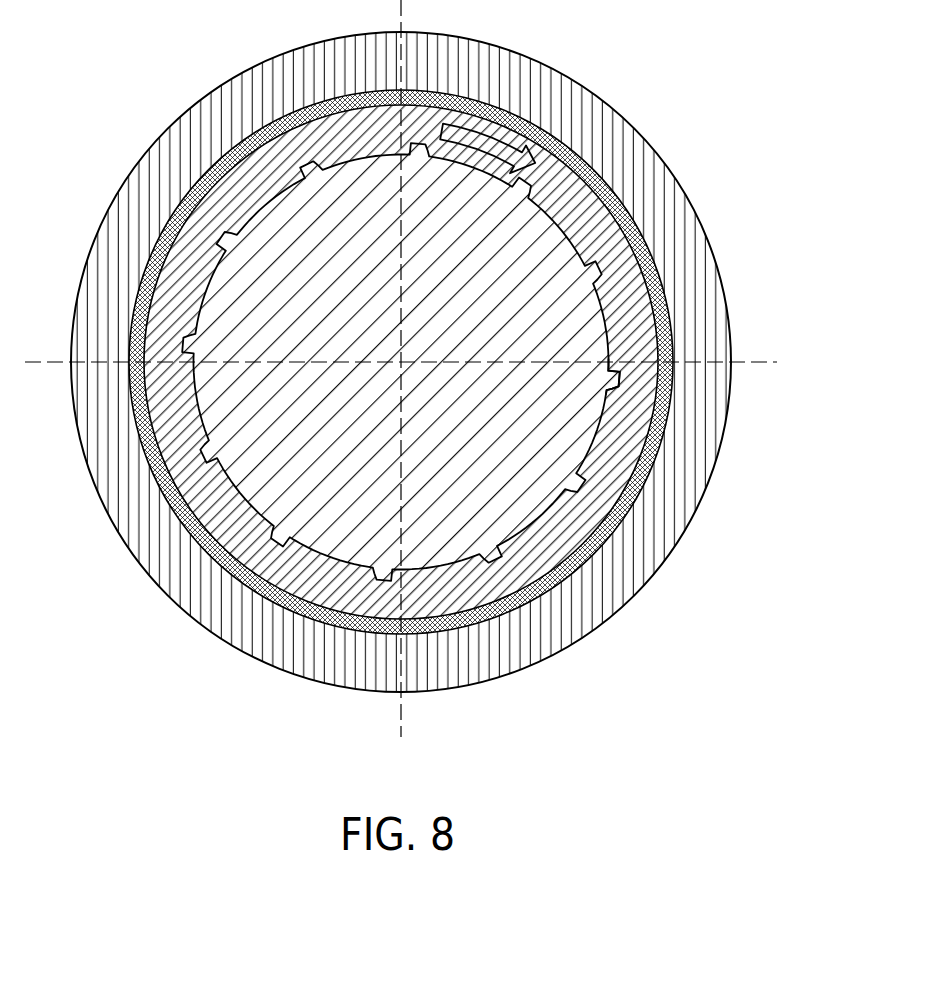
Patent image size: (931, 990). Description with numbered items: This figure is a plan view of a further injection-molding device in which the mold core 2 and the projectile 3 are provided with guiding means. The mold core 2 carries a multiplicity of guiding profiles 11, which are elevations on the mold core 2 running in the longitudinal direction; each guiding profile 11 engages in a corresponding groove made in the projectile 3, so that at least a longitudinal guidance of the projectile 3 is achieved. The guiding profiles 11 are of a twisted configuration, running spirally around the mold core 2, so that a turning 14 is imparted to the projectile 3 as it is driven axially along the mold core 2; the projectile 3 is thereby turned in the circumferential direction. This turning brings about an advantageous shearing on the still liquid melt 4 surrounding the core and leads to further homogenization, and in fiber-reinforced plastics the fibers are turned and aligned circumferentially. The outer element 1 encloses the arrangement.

The outer ring / housing 1 is at (637, 170).
The mold core 2 is at (272, 490).
The projectile 3 is at (167, 433).
The melt 4 is at (177, 213).
The guiding profile 11 is at (618, 388).
The turning 14 is at (557, 142).